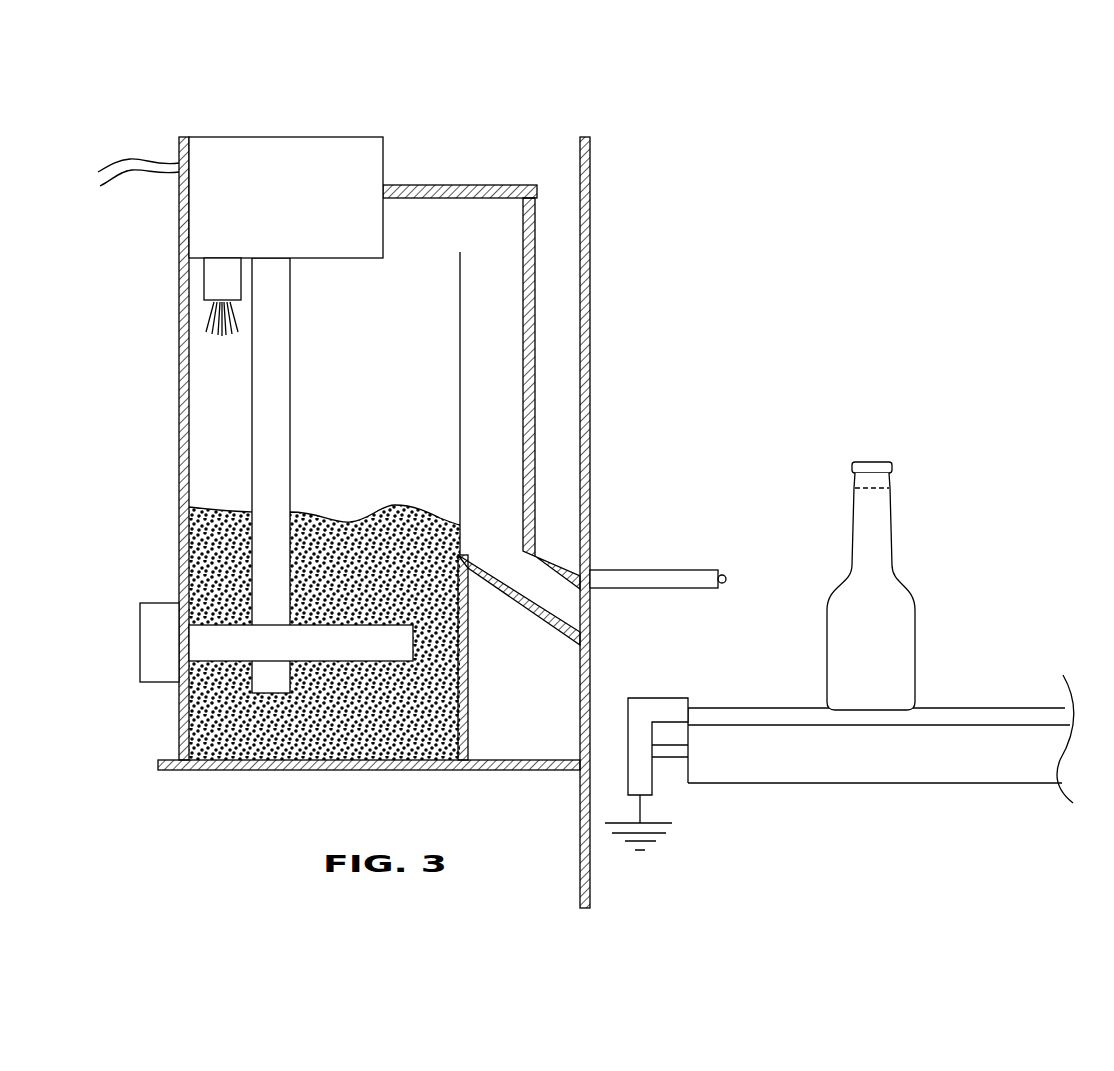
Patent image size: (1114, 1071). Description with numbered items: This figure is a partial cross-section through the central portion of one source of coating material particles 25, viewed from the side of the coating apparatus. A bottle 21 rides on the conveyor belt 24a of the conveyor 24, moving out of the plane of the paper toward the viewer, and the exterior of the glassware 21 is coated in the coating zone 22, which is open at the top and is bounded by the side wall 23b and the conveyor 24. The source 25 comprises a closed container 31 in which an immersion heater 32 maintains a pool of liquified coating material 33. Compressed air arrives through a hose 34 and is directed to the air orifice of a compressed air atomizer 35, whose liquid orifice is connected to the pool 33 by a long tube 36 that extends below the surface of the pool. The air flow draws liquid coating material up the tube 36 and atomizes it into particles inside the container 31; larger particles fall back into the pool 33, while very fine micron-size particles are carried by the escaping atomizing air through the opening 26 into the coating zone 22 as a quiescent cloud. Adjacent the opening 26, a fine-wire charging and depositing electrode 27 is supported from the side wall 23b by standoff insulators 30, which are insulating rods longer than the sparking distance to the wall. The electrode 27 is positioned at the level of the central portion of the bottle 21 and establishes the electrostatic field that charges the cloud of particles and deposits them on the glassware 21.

The bottle 21 is at (890, 487).
The coating zone 22 is at (830, 348).
The side wall 23b is at (596, 225).
The conveyor 24 is at (880, 802).
The conveyor belt 24a is at (715, 708).
The source of coating material particles 25 is at (248, 114).
The opening 26 is at (594, 607).
The charging and depositing electrode 27 is at (725, 574).
The standoff insulator 30 is at (630, 568).
The closed container 31 is at (178, 418).
The immersion heater 32 is at (140, 650).
The pool of liquified coating material 33 is at (207, 580).
The hose 34 is at (126, 160).
The compressed air atomizer 35 is at (204, 272).
The long tube 36 is at (252, 430).